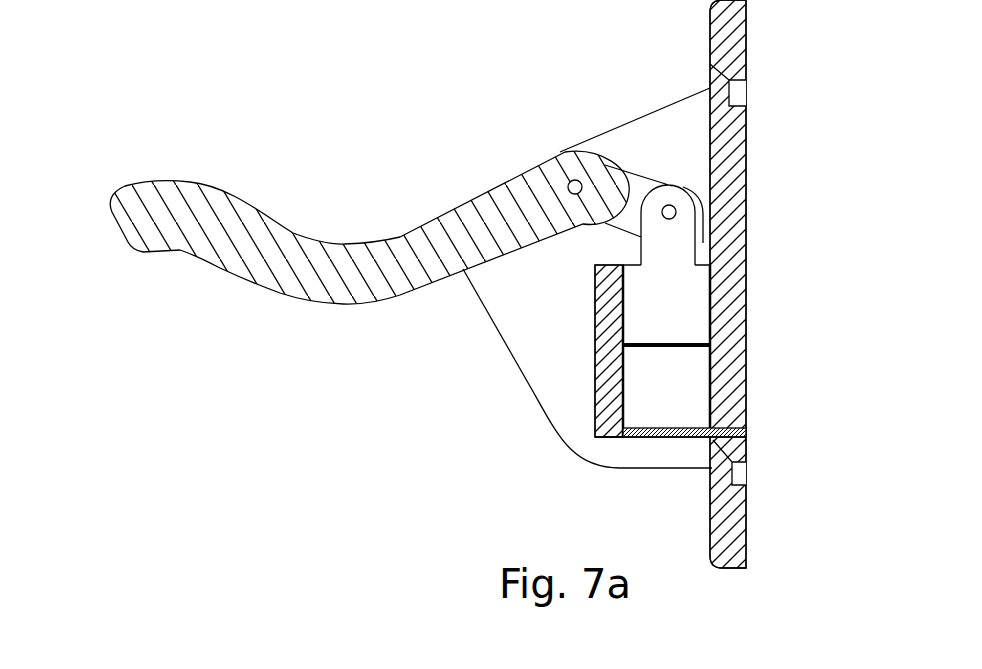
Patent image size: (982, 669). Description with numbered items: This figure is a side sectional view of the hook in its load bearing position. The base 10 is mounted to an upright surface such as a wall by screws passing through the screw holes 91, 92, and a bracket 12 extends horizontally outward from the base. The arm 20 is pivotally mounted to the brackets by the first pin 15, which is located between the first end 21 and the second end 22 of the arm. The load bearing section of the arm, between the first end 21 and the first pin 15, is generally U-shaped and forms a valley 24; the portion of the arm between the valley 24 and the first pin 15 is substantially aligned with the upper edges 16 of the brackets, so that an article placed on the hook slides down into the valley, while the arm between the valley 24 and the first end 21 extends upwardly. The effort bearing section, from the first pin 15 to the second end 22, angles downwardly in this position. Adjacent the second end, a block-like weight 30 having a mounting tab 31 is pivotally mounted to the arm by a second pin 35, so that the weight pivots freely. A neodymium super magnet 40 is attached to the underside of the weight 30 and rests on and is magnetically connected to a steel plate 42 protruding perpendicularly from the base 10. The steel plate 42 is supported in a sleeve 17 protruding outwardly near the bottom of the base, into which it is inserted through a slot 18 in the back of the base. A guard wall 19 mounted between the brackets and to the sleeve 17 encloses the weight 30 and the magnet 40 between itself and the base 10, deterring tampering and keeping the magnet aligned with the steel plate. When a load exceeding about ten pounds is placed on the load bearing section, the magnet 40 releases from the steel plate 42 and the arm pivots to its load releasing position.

The base 10 is at (725, 544).
The bracket 12 is at (523, 306).
The first pin 15 is at (573, 181).
The upper edges 16 is at (658, 107).
The sleeve 17 is at (675, 437).
The slot 18 is at (748, 433).
The guard wall 19 is at (597, 407).
The arm 20 is at (312, 280).
The first end 21 is at (112, 216).
The second end 22 is at (703, 220).
The valley 24 is at (350, 240).
The weight 30 is at (678, 317).
The mounting tab 31 is at (677, 246).
The second pin 35 is at (676, 209).
The magnet 40 is at (688, 382).
The steel plate 42 is at (635, 440).
The screw hole 91 is at (738, 95).
The screw hole 92 is at (740, 474).